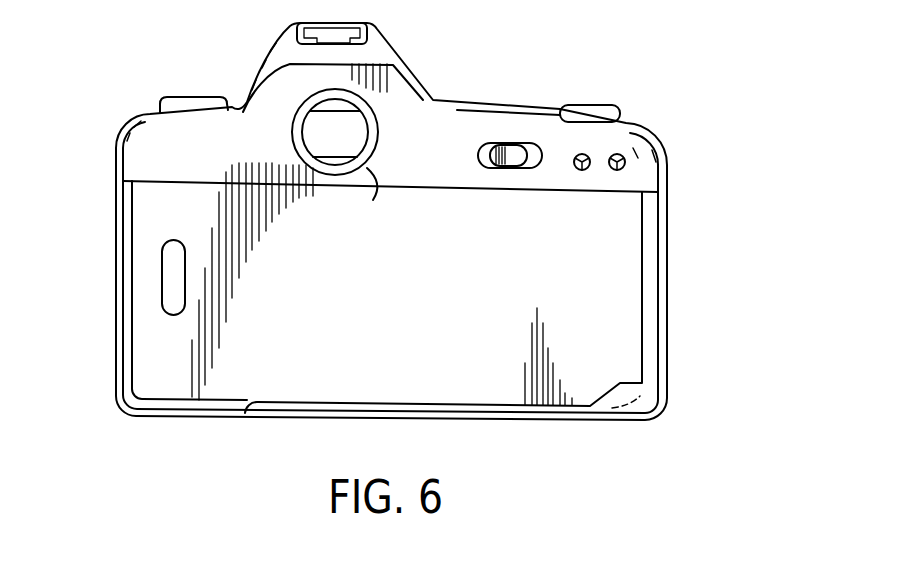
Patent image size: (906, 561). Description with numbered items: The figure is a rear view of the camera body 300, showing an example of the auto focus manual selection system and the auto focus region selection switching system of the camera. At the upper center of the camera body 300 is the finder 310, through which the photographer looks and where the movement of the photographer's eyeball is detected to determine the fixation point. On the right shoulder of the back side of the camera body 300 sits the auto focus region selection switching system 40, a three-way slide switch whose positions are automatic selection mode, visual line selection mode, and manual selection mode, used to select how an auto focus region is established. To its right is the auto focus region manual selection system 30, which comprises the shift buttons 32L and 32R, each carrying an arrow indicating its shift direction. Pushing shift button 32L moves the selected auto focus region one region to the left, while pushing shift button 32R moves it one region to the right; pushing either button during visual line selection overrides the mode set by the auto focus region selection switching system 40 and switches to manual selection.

The camera body 300 is at (134, 130).
The finder 310 is at (372, 178).
The auto focus region selection switching system 40 is at (503, 117).
The auto focus region manual selection system 30 is at (690, 122).
The shift button 32L is at (580, 153).
The shift button 32R is at (618, 153).